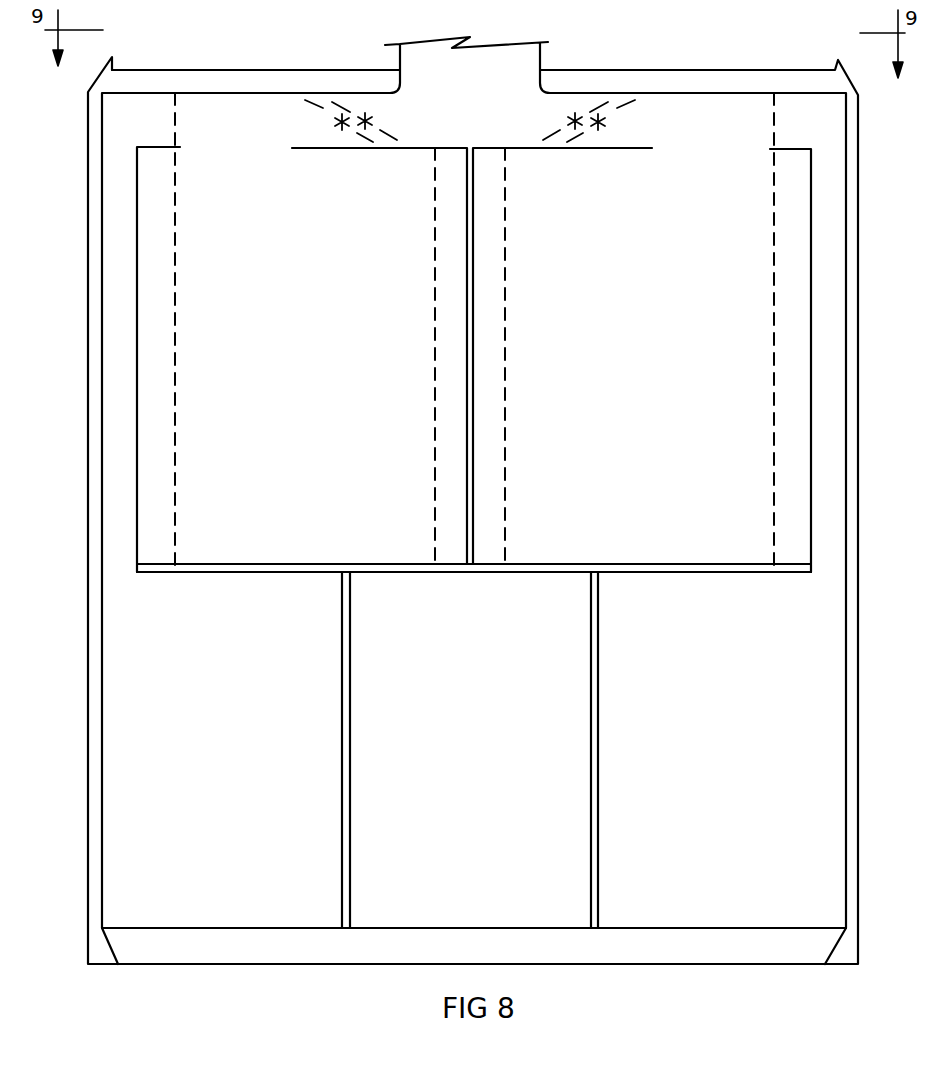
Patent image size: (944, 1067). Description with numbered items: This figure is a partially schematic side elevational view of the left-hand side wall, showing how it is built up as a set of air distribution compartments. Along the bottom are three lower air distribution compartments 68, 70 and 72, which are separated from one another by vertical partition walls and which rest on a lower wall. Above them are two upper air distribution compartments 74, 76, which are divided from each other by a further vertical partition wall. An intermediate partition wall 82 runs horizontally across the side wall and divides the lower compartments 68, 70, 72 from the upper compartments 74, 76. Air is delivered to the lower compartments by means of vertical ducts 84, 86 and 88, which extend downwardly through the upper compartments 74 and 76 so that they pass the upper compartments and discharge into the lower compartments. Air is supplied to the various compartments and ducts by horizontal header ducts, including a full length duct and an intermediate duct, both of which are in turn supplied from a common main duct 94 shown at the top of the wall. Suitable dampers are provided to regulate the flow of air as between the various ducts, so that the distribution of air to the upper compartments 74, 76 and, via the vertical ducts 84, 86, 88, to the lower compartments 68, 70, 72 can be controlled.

The lower air distribution compartment 68 is at (219, 742).
The lower air distribution compartment 70 is at (478, 742).
The lower air distribution compartment 72 is at (723, 742).
The upper air distribution compartment 74 is at (305, 420).
The upper air distribution compartment 76 is at (635, 421).
The intermediate partition wall 82 is at (310, 572).
The vertical duct 84 is at (128, 302).
The vertical duct 86 is at (448, 357).
The vertical duct 88 is at (825, 335).
The main duct 94 is at (541, 55).